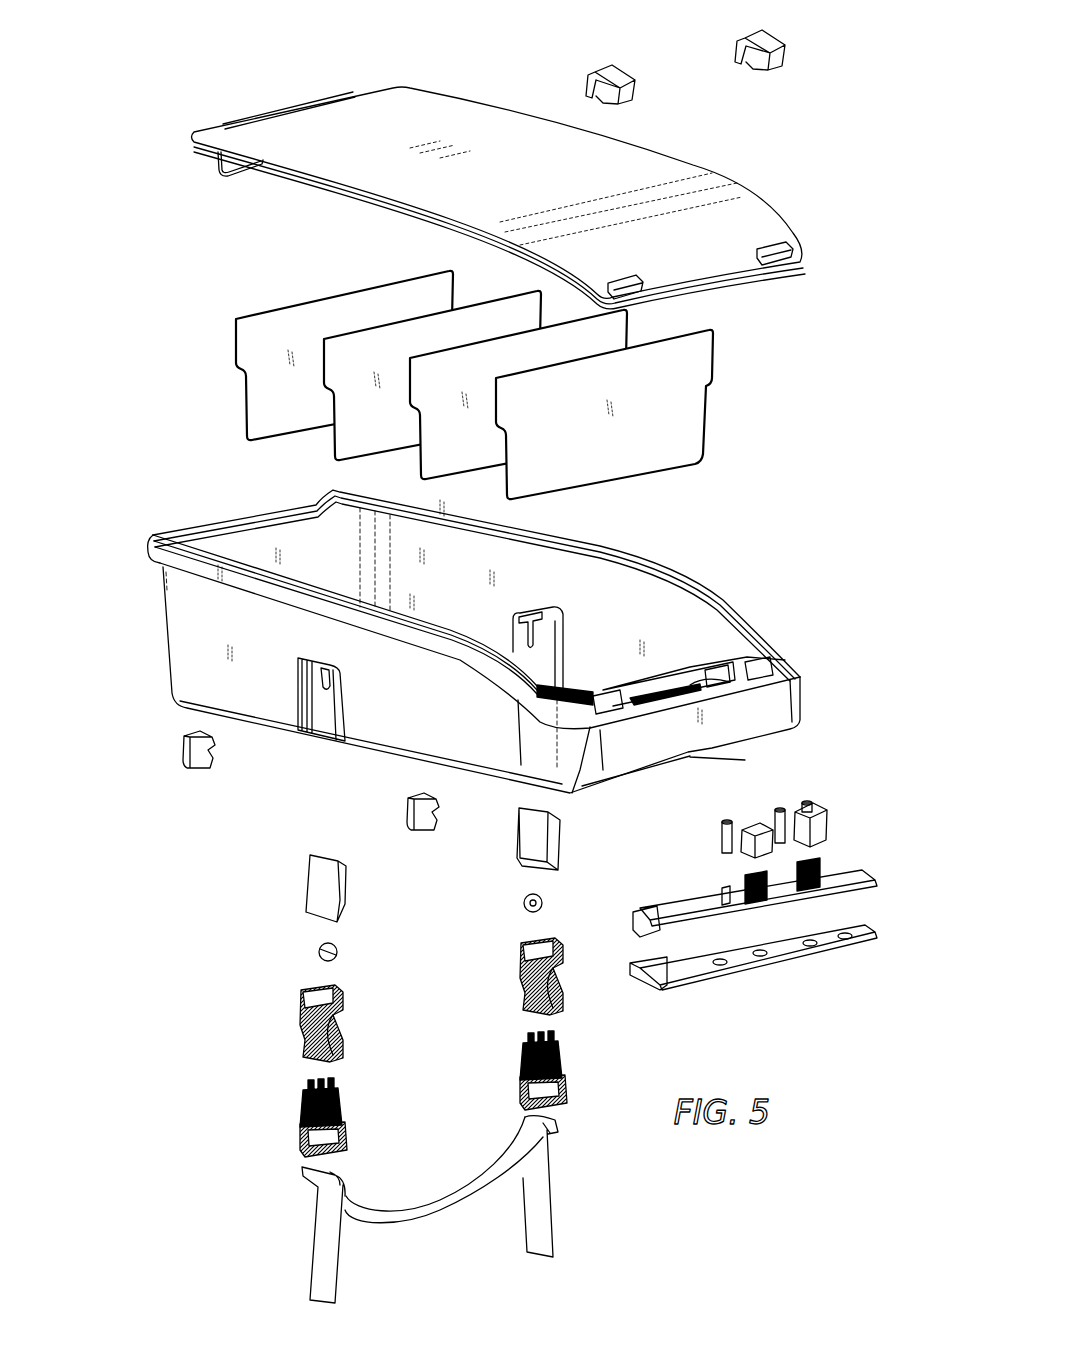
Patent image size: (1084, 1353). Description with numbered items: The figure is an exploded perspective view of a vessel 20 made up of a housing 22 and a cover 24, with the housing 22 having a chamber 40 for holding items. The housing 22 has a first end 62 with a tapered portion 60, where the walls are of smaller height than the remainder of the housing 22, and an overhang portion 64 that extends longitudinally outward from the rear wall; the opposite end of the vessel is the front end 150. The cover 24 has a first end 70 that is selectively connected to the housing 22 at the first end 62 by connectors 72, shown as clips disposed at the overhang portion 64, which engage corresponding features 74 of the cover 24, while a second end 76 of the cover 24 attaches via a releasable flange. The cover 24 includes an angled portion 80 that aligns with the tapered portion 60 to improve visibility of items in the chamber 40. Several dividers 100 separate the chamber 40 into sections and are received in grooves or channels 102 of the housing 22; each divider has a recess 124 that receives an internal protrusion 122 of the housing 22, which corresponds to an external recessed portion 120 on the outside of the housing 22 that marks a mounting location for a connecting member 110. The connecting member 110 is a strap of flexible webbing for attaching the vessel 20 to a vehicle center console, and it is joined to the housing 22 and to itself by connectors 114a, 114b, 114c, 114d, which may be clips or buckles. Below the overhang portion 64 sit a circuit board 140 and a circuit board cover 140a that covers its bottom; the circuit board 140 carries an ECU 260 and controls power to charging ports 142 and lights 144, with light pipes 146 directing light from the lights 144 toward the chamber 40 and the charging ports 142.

The vessel 20 is at (178, 46).
The housing 22 is at (235, 730).
The cover 24 is at (392, 103).
The chamber 40 is at (670, 607).
The tapered portion 60 is at (465, 643).
The first end 62 is at (822, 573).
The overhang portion 64 is at (806, 659).
The first end 70 is at (547, 171).
The connectors 72 is at (612, 66).
The corresponding features 74 is at (770, 248).
The second end 76 is at (422, 78).
The angled portion 80 is at (740, 192).
The dividers 100 is at (531, 385).
The grooves or channels 102 is at (580, 688).
The connecting member 110 is at (443, 1228).
The connector 114a is at (348, 885).
The connector 114b is at (562, 842).
The connector 114c is at (292, 988).
The connector 114d is at (572, 945).
The external recessed portion 120 is at (292, 697).
The internal protrusion 122 is at (545, 598).
The recess 124 is at (716, 424).
The circuit board 140 is at (761, 881).
The circuit board cover 140a is at (835, 948).
The charging ports 142 is at (820, 830).
The lights 144 is at (727, 892).
The light pipes 146 is at (722, 822).
The front end 150 is at (118, 584).
The electronic control unit 260 is at (688, 903).